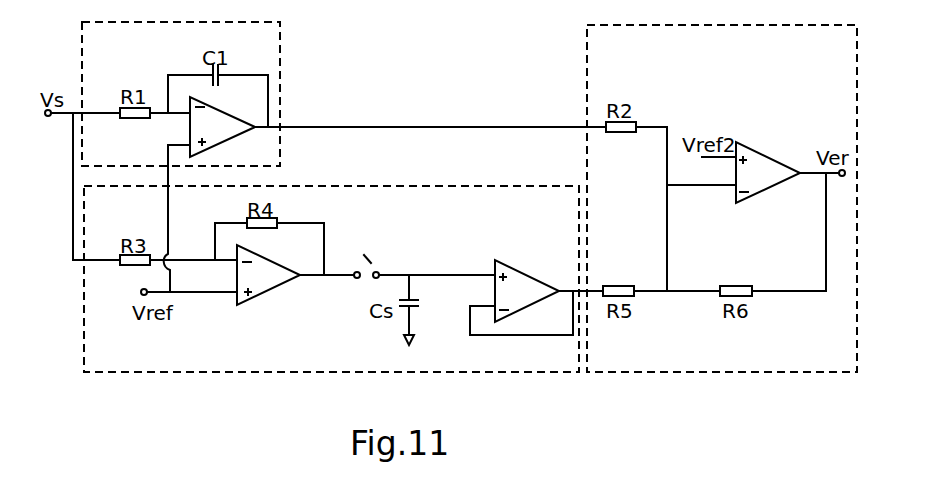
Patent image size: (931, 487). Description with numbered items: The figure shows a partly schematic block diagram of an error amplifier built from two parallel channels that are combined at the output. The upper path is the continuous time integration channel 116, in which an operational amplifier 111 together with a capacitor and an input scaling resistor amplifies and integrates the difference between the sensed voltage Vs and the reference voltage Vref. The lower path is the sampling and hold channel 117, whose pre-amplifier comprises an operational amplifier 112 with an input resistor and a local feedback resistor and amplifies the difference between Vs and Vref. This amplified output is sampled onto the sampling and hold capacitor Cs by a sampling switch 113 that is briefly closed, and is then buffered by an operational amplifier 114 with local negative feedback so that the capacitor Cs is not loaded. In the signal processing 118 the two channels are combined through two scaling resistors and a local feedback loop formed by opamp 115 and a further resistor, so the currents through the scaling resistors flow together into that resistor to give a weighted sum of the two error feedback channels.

The operational amplifier 111 is at (229, 136).
The operational amplifier 112 is at (279, 285).
The sampling switch 113 is at (364, 255).
The operational amplifier 114 is at (535, 303).
The opamp 115 is at (777, 185).
The continuous time integration channel 116 is at (136, 57).
The sampling and hold channel 117 is at (134, 357).
The signal processing 118 is at (648, 67).